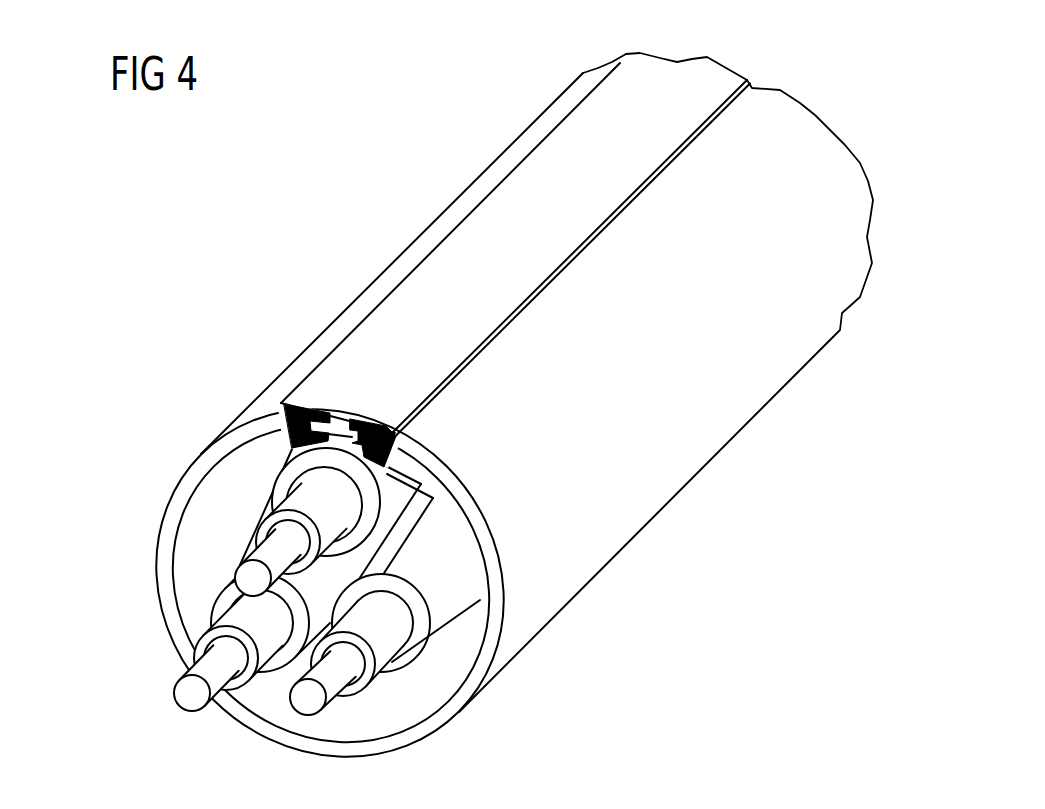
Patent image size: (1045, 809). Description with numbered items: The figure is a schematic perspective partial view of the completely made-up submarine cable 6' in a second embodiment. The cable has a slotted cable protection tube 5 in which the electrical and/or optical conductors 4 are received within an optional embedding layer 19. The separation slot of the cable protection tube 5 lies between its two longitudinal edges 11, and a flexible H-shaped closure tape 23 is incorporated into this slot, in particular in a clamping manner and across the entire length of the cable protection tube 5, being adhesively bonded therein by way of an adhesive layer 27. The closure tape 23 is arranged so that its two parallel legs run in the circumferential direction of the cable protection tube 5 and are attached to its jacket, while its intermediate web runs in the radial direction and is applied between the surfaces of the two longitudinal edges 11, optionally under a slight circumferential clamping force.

The completely made-up submarine cable 6' is at (512, 406).
The electrical and/or optical conductors 4 is at (455, 560).
The cable protection tube 5 is at (687, 457).
The longitudinal edges 11 is at (307, 425).
The embedding layer 19 is at (215, 518).
The H-shaped closure tape 23 is at (473, 230).
The adhesive layer 27 is at (312, 412).